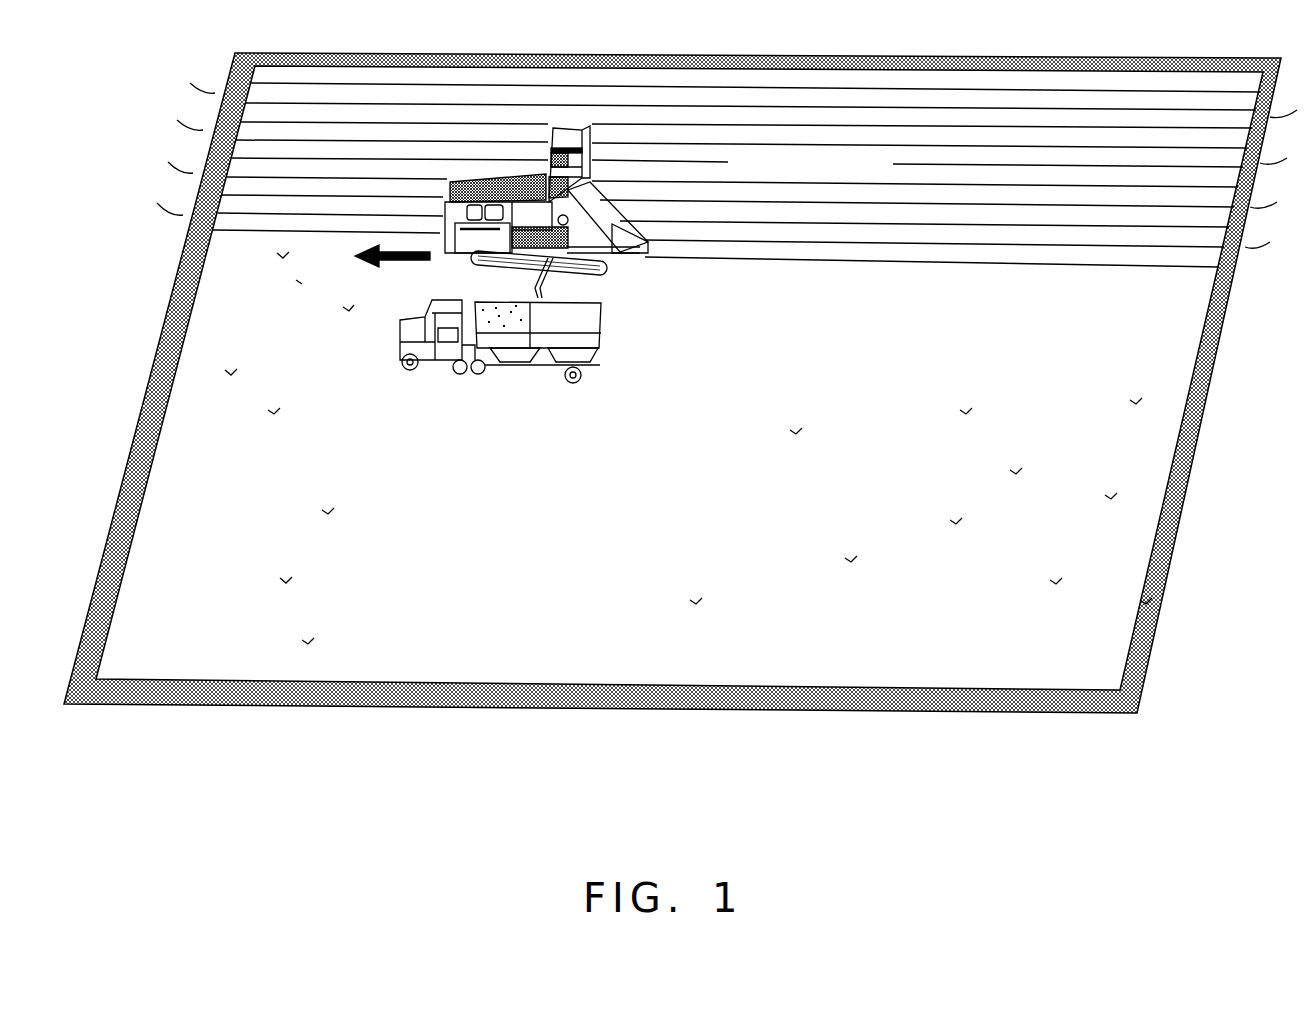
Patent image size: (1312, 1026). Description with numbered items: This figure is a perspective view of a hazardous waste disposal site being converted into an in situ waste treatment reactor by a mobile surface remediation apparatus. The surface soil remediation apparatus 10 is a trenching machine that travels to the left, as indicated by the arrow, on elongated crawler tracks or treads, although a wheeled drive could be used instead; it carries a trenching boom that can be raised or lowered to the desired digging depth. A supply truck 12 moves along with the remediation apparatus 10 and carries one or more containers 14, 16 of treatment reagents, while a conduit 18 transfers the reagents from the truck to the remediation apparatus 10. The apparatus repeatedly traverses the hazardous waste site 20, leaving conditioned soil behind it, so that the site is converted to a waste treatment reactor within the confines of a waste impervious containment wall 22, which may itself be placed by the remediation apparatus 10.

The surface soil remediation apparatus 10 is at (643, 283).
The supply truck 12 is at (437, 388).
The container 14 is at (513, 325).
The container 16 is at (587, 330).
The conduit 18 is at (545, 281).
The hazardous waste site 20 is at (680, 388).
The waste impervious containment wall 22 is at (1193, 418).